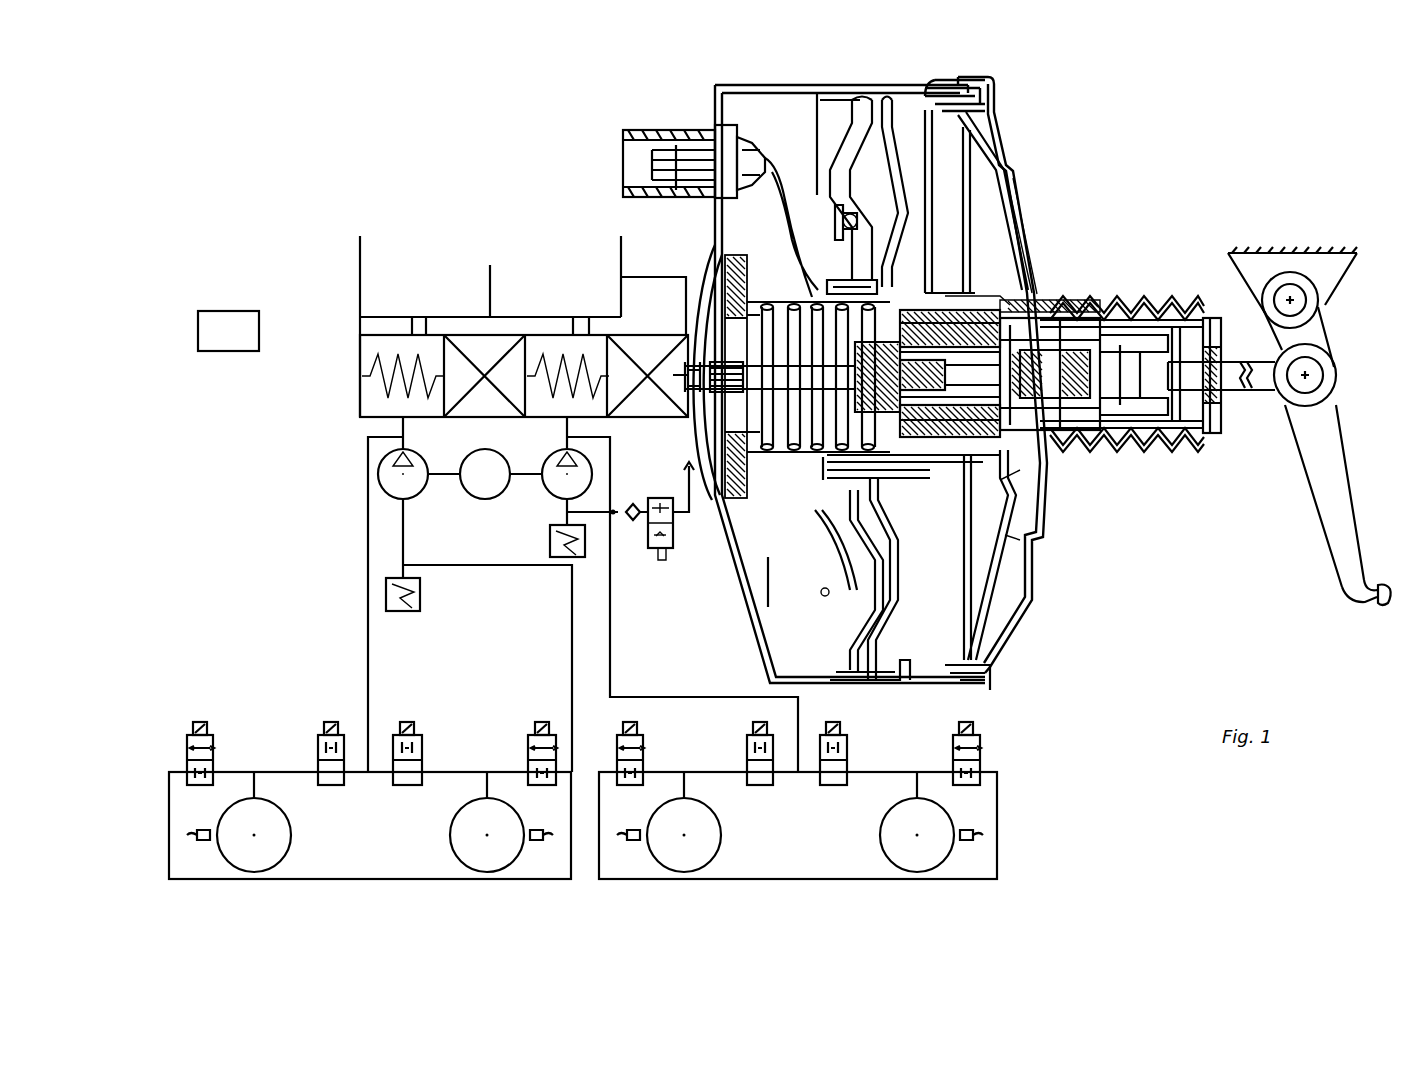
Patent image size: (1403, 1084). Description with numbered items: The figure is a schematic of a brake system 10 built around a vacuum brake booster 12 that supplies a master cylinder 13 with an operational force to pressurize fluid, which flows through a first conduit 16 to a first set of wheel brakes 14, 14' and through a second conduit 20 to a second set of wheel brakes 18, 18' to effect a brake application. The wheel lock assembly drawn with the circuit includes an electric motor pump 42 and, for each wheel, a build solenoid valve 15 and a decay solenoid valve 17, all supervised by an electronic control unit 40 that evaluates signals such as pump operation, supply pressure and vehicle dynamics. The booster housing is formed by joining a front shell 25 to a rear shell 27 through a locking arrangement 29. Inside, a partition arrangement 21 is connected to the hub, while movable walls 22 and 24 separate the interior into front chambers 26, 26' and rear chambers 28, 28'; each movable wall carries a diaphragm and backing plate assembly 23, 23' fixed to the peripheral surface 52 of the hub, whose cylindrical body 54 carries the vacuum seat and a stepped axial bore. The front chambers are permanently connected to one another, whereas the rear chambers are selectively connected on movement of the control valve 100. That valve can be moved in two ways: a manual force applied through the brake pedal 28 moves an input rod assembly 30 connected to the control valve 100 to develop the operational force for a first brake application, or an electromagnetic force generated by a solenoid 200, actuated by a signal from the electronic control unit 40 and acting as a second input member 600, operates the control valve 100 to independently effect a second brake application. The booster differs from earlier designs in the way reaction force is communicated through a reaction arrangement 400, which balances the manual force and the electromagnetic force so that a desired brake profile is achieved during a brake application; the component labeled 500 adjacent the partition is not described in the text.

The brake system 10 is at (206, 539).
The vacuum brake booster 12 is at (1128, 151).
The master cylinder 13 is at (360, 348).
The first set of wheel brakes 14 is at (370, 825).
The first set of wheel brakes 14' is at (479, 822).
The build solenoid valve 15 is at (318, 746).
The first conduit 16 is at (368, 523).
The decay solenoid valve 17 is at (190, 740).
The second set of wheel brakes 18 is at (798, 825).
The second set of wheel brakes 18' is at (907, 822).
The second conduit 20 is at (686, 698).
The partition arrangement 21 is at (895, 104).
The movable wall 22 is at (840, 633).
The diaphragm and backing plate assembly 23 is at (805, 215).
The diaphragm and backing plate assembly 23' is at (993, 201).
The movable wall 24 is at (972, 562).
The front shell 25 is at (712, 101).
The front chamber 26 is at (812, 144).
The front chamber 26' is at (915, 201).
The rear shell 27 is at (1009, 148).
The brake pedal 28 is at (1106, 359).
The rear chamber 28' is at (1006, 538).
The locking arrangement 29 is at (1003, 80).
The input rod assembly 30 is at (1262, 389).
The electronic control unit 40 is at (221, 311).
The electric motor pump 42 is at (487, 502).
The peripheral surface 52 is at (928, 272).
The cylindrical body 54 is at (944, 295).
The control valve 100 is at (1127, 445).
The solenoid 200 is at (937, 483).
The reaction arrangement 400 is at (836, 408).
The valve assembly 500 is at (833, 277).
The second input member 600 is at (972, 293).